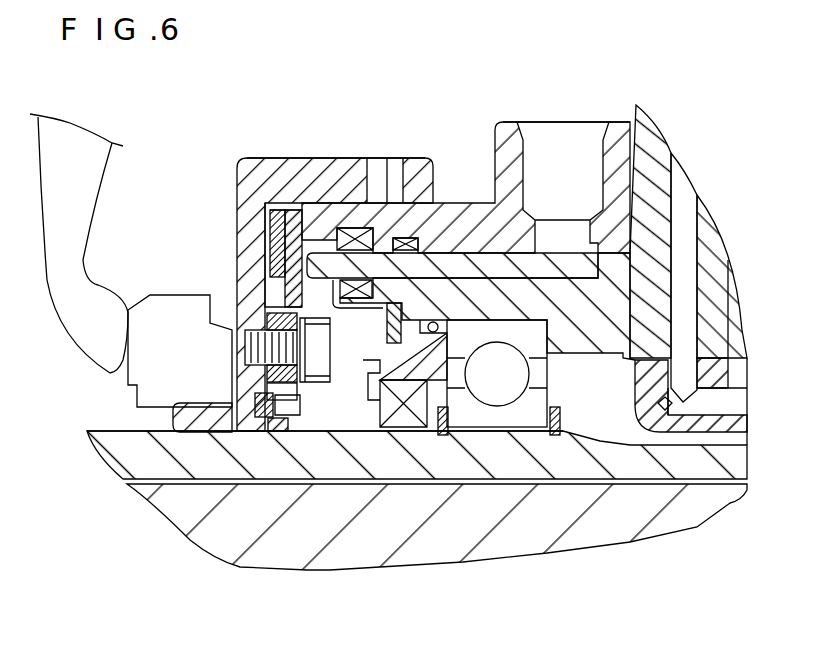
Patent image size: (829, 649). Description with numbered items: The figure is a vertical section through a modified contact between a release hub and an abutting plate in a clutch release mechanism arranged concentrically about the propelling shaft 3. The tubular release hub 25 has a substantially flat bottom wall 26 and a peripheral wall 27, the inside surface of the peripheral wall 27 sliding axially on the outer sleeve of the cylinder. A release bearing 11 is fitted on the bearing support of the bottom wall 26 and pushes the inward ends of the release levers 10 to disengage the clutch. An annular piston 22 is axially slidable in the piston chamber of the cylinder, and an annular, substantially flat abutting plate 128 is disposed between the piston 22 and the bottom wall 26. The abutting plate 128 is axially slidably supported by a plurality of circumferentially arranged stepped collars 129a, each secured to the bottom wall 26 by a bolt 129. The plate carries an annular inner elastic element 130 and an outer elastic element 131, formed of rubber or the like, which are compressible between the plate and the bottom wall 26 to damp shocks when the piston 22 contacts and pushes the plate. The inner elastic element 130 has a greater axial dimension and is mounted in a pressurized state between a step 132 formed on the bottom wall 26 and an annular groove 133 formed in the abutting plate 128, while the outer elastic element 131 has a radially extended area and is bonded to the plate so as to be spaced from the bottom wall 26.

The propelling shaft 3 is at (460, 470).
The release lever 10 is at (90, 207).
The release bearing 11 is at (138, 372).
The annular piston 22 is at (447, 257).
The tubular release hub 25 is at (318, 152).
The bottom wall 26 is at (238, 233).
The peripheral wall 27 is at (150, 437).
The abutting plate 128 is at (300, 231).
The bolt 129 is at (248, 327).
The stepped collar 129a is at (303, 383).
The inner elastic element 130 is at (263, 418).
The outer elastic element 131 is at (272, 226).
The step 132 is at (257, 412).
The annular groove 133 is at (272, 420).